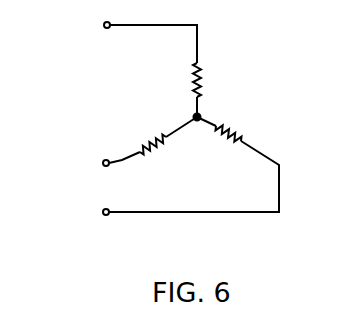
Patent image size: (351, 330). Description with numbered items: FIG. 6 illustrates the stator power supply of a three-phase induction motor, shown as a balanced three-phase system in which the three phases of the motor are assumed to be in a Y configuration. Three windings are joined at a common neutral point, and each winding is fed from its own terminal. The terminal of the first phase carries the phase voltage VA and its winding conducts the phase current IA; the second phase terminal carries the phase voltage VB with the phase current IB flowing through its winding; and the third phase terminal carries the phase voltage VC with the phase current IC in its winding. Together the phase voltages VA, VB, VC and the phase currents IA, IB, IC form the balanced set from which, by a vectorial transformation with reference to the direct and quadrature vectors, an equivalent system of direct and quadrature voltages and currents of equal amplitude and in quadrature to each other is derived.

The phase voltage VA is at (56, 9).
The phase voltage VB is at (46, 148).
The phase voltage VC is at (51, 197).
The phase current IA is at (216, 53).
The phase current IB is at (135, 85).
The phase current IC is at (243, 177).